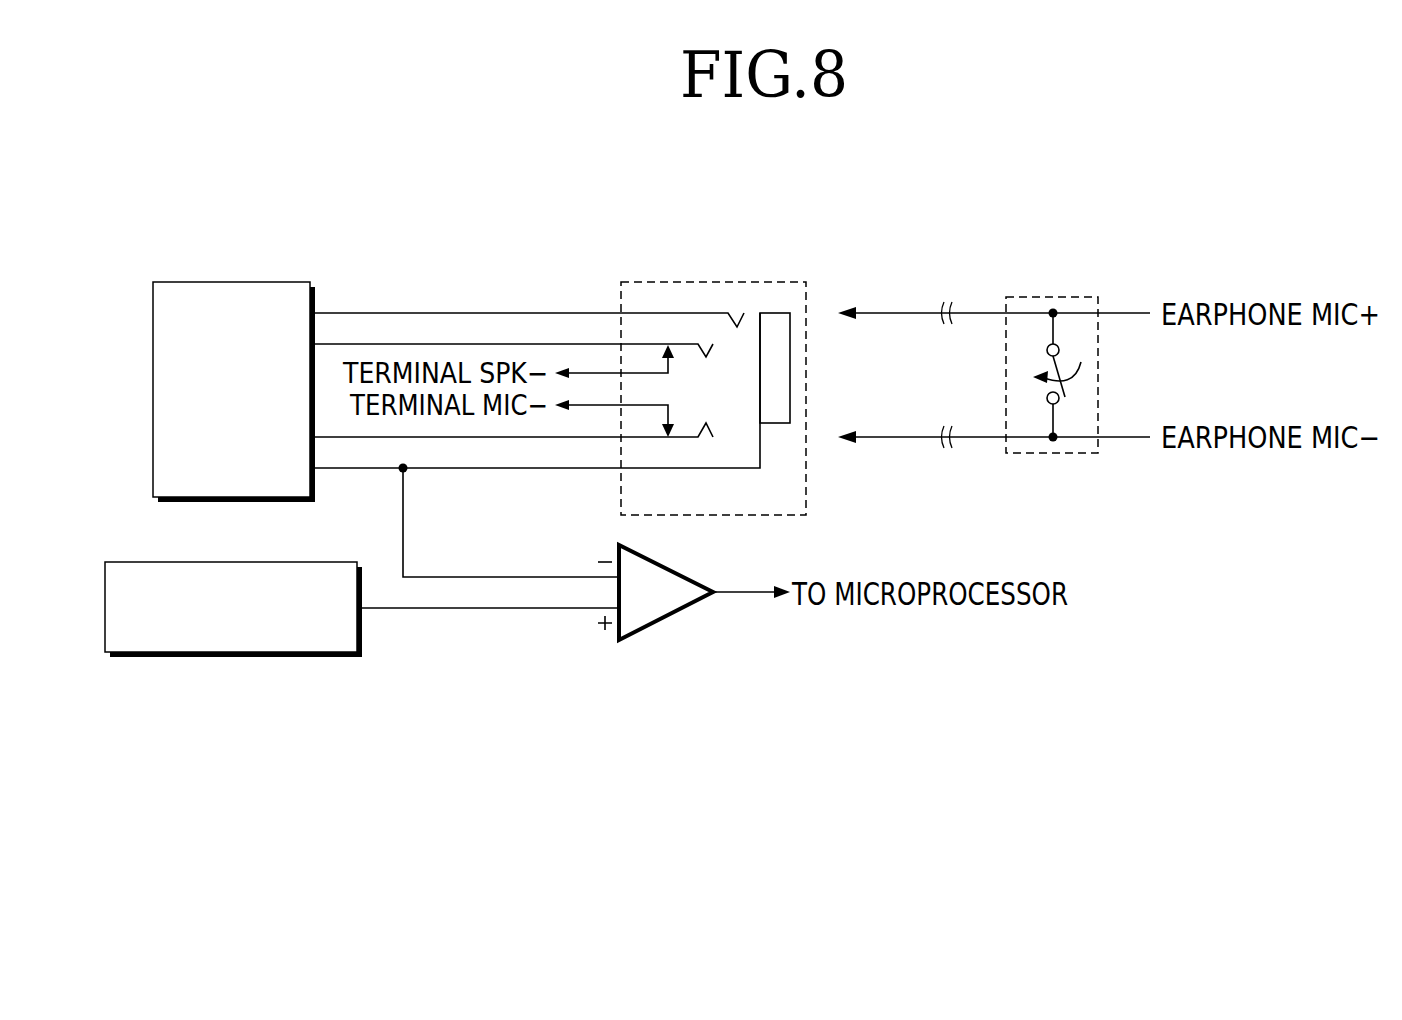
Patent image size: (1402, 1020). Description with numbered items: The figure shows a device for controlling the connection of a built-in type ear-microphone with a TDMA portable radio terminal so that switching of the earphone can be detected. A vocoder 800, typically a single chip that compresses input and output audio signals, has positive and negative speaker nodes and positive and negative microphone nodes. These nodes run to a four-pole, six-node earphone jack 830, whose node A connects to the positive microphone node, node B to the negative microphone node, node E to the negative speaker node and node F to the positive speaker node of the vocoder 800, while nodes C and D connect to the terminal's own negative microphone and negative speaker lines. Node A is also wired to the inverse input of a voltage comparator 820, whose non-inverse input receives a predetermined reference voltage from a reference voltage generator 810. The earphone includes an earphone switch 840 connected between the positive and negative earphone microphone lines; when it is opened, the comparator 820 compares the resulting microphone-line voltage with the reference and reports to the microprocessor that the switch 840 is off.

The vocoder 800 is at (230, 282).
The reference voltage generator 810 is at (232, 562).
The voltage comparator 820 is at (668, 565).
The earphone jack 830 is at (712, 282).
The earphone switch 840 is at (1053, 297).